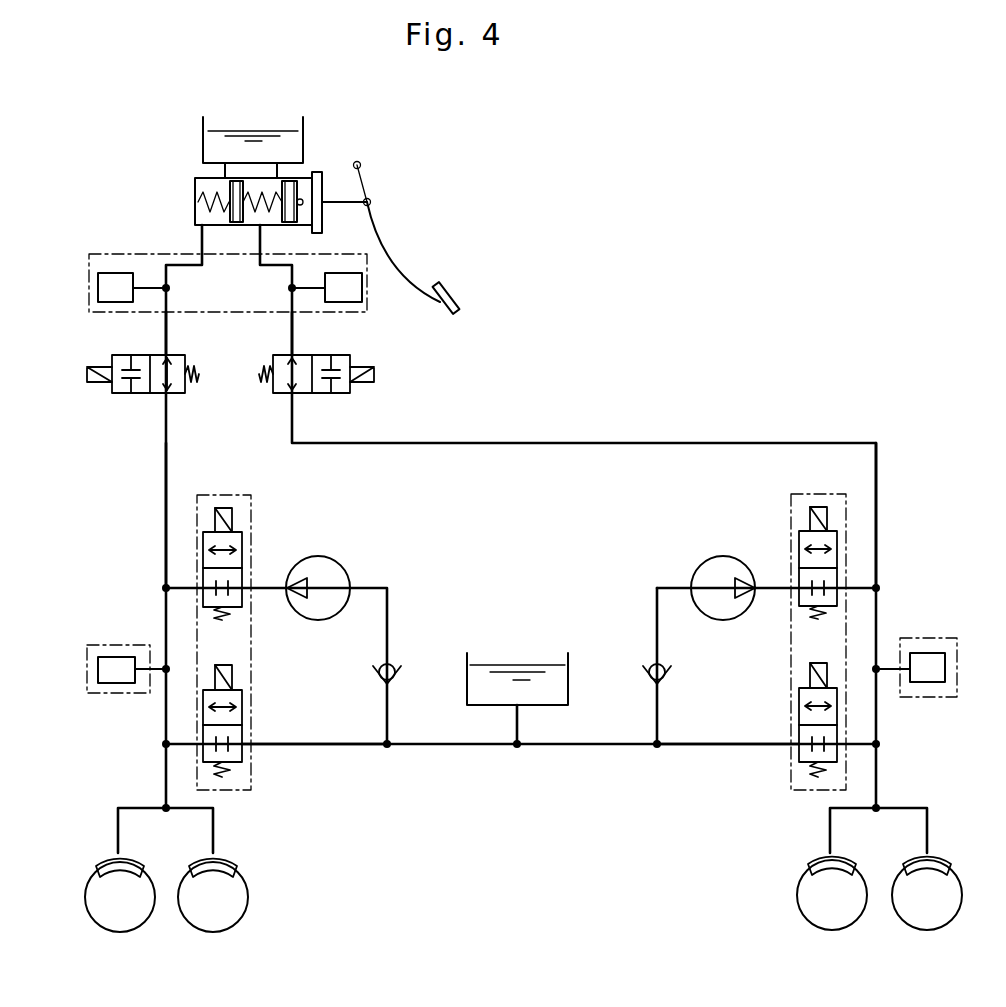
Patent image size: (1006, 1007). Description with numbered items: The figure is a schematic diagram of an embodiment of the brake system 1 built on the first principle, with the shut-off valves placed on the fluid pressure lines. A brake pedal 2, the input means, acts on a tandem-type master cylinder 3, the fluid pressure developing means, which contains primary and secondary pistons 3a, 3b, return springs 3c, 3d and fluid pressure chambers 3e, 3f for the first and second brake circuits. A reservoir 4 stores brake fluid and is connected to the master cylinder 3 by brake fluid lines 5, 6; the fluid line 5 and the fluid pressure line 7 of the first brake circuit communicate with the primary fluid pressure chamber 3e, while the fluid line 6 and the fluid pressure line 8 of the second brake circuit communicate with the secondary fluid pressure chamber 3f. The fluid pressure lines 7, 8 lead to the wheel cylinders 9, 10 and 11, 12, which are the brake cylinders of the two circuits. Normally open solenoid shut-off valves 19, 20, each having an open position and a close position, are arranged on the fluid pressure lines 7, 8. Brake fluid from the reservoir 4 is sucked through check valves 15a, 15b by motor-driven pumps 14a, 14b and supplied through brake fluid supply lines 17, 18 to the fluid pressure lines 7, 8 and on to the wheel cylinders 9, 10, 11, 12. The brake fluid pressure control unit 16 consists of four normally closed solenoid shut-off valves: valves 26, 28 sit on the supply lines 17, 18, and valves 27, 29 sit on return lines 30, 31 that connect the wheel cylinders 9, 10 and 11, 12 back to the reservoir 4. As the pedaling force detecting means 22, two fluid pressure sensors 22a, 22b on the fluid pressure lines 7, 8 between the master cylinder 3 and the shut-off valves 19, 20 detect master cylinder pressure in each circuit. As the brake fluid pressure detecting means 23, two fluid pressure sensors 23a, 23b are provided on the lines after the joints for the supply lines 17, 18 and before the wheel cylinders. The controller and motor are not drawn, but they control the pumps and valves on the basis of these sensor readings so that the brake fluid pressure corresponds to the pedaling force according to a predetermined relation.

The brake system 1 is at (728, 307).
The brake pedal 2 is at (458, 300).
The tandem-type master cylinder 3 is at (318, 178).
The primary piston 3a is at (292, 220).
The secondary piston 3b is at (222, 210).
The return spring 3c is at (262, 216).
The return spring 3d is at (210, 203).
The primary fluid pressure chamber 3e is at (256, 190).
The secondary fluid pressure chamber 3f is at (195, 184).
The reservoir 4 is at (203, 140).
The brake fluid line 5 is at (280, 175).
The brake fluid line 6 is at (232, 178).
The fluid pressure line 7 is at (292, 325).
The fluid pressure line 8 is at (166, 325).
The wheel cylinder 9 is at (937, 856).
The wheel cylinder 10 is at (820, 853).
The wheel cylinder 11 is at (233, 858).
The wheel cylinder 12 is at (112, 858).
The pump 14a is at (705, 563).
The pump 14b is at (340, 566).
The check valve 15a is at (650, 662).
The check valve 15b is at (392, 662).
The brake fluid pressure control unit 16 is at (251, 503).
The brake fluid supply line 17 is at (860, 586).
The brake fluid supply line 18 is at (182, 586).
The solenoid shut-off valve 19 is at (320, 393).
The solenoid shut-off valve 20 is at (160, 393).
The pedaling force detecting means 22 is at (89, 262).
The fluid pressure sensor 22a is at (348, 302).
The fluid pressure sensor 22b is at (98, 300).
The brake fluid pressure detecting means 23 is at (87, 682).
The fluid pressure sensor 23a is at (930, 653).
The fluid pressure sensor 23b is at (114, 657).
The solenoid shut-off valve 26 is at (799, 551).
The solenoid shut-off valve 27 is at (799, 690).
The solenoid shut-off valve 28 is at (242, 533).
The solenoid shut-off valve 29 is at (242, 691).
The return line 30 is at (710, 746).
The return line 31 is at (333, 746).